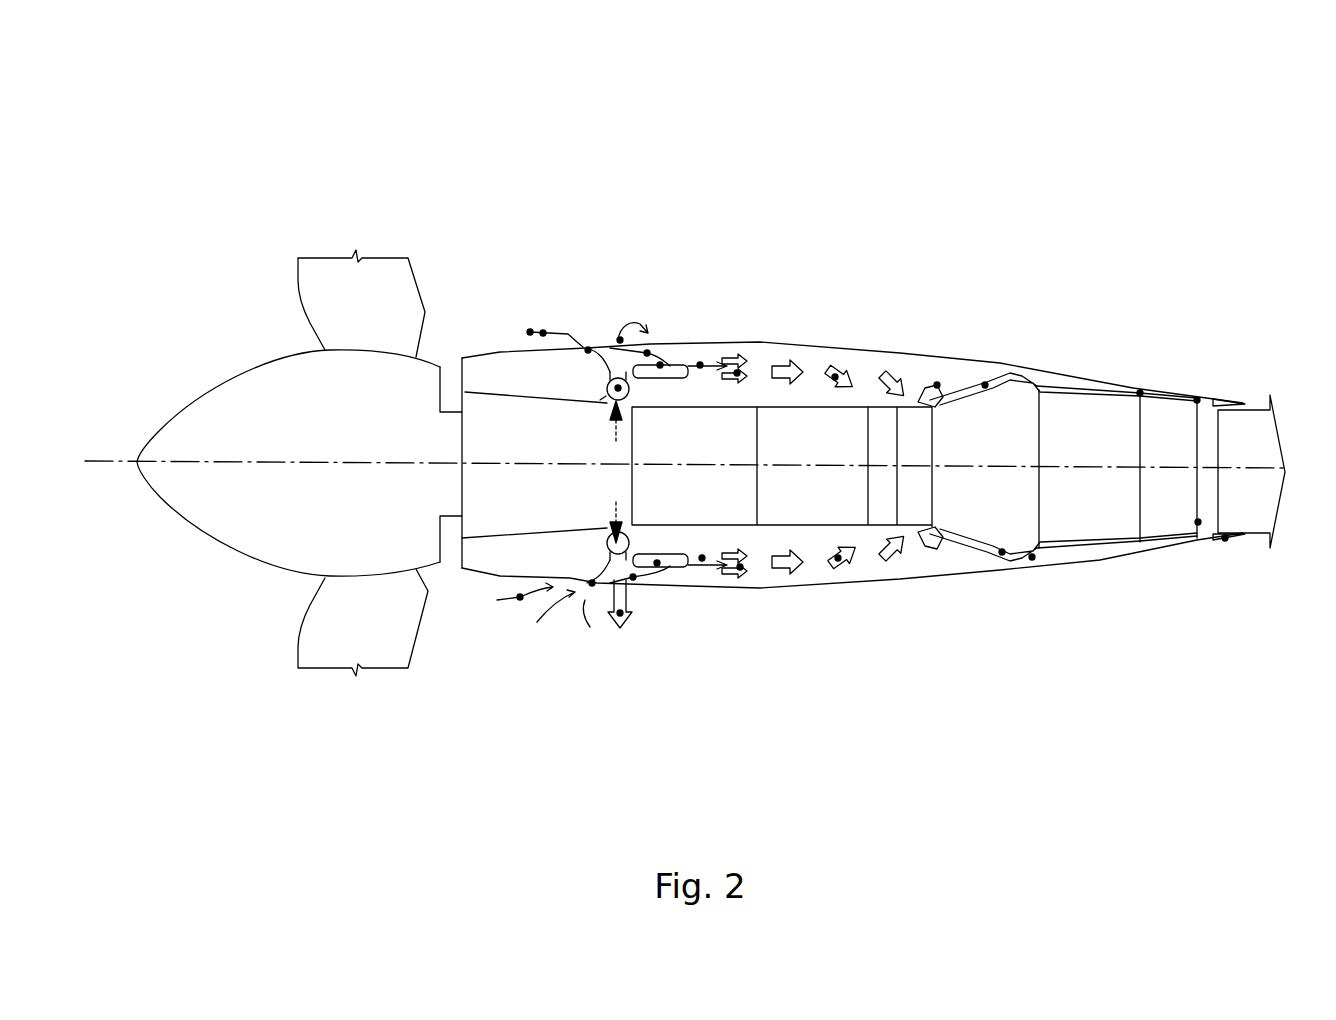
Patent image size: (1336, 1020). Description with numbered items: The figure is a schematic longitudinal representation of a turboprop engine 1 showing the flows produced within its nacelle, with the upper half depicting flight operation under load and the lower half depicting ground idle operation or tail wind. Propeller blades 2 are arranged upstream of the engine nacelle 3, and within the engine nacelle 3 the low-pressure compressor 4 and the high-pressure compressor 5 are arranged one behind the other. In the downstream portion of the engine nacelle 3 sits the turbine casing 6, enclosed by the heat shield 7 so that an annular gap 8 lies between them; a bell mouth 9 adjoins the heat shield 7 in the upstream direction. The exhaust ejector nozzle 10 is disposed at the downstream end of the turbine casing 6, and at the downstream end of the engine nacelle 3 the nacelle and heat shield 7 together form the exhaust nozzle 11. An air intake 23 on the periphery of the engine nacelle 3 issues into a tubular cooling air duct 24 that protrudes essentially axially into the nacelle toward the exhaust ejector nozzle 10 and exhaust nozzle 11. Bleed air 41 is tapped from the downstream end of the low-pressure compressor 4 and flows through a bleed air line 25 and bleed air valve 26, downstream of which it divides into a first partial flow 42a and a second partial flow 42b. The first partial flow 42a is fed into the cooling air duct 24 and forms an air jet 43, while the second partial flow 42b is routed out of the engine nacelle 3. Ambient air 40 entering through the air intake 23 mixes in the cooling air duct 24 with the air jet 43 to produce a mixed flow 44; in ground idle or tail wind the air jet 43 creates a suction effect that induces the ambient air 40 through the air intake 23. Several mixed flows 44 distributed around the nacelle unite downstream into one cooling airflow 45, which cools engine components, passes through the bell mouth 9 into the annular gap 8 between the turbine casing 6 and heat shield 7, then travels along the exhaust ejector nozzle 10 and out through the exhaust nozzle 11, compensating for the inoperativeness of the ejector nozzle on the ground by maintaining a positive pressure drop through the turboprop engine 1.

The turboprop engine 1 is at (232, 163).
The propeller blades 2 is at (335, 297).
The engine nacelle 3 is at (687, 343).
The low-pressure compressor 4 is at (535, 503).
The high-pressure compressor 5 is at (707, 503).
The turbine casing 6 is at (1002, 552).
The heat shield 7 is at (1032, 557).
The annular gap 8 is at (985, 385).
The bell mouth 9 is at (937, 385).
The exhaust ejector nozzle 10 is at (1140, 393).
The exhaust nozzle 11 is at (1198, 522).
The air intake 23 is at (588, 350).
The cooling air duct 24 is at (647, 353).
The bleed air line 25 is at (607, 397).
The bleed air valve 26 is at (618, 388).
The ambient air 40 is at (530, 332).
The bleed air 41 is at (597, 472).
The first partial flow 42a is at (660, 365).
The second partial flow 42b is at (620, 340).
The air jet 43 is at (700, 365).
The mixed flow 44 is at (737, 373).
The cooling airflow 45 is at (835, 377).